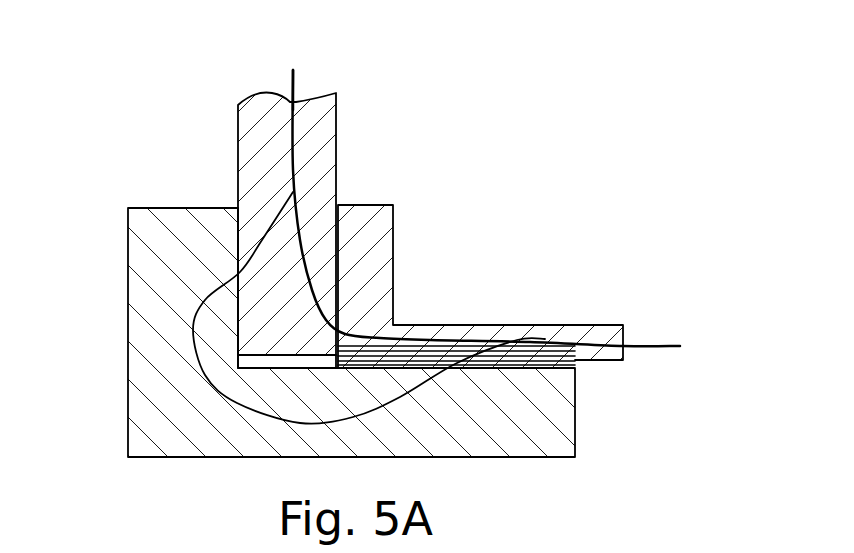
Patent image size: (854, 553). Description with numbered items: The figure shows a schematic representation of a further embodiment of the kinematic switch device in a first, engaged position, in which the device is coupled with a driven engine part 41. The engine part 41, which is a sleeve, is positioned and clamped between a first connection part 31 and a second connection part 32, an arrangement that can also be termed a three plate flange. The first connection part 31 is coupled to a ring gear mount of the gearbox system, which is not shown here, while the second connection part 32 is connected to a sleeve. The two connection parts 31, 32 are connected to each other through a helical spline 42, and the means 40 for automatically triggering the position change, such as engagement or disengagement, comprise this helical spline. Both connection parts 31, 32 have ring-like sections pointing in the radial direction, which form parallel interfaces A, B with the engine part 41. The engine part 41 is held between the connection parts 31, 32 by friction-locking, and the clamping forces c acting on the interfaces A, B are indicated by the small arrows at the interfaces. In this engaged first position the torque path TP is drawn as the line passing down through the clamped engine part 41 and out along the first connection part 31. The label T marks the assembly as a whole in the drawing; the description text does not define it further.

The torque path TP is at (297, 80).
The engine part 41 is at (317, 127).
The interface A is at (217, 207).
The interface B is at (340, 207).
The tool assembly T is at (552, 223).
The first connection part 31 is at (395, 290).
The second connection part 32 is at (140, 278).
The means for automatically triggering the position change 40 is at (467, 337).
The helical spline 42 is at (575, 362).
The clamping forces c is at (232, 252).